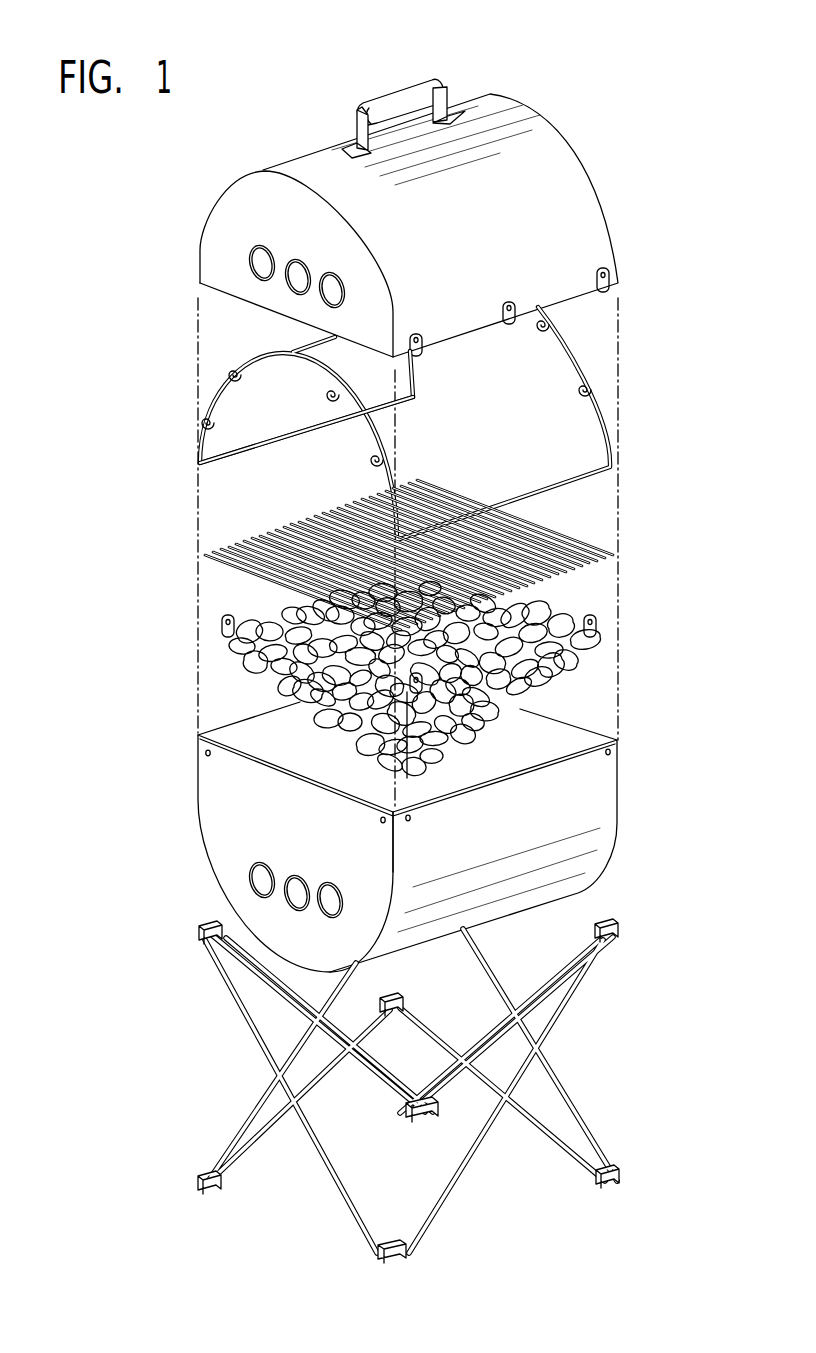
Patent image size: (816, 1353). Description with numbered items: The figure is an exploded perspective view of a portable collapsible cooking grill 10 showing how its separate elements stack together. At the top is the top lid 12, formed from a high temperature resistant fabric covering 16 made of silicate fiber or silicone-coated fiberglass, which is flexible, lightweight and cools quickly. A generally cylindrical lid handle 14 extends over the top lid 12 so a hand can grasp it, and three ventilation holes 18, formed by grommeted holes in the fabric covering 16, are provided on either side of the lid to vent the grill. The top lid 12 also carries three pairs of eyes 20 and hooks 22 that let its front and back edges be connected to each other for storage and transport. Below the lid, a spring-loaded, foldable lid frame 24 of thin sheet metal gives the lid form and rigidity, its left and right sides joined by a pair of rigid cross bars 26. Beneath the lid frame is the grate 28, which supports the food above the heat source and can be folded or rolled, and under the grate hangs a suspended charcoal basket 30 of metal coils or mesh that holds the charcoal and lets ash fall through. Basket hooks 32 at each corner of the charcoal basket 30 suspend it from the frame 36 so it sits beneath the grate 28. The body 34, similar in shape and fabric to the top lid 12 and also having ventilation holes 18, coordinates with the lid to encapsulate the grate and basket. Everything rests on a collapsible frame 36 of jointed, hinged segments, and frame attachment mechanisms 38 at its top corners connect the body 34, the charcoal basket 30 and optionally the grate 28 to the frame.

The portable collapsible cooking grill 10 is at (644, 106).
The top lid 12 is at (587, 207).
The lid handle 14 is at (397, 86).
The fabric covering 16 is at (225, 215).
The ventilation holes 18 is at (290, 280).
The eyes 20 is at (546, 114).
The hooks 22 is at (603, 284).
The lid frame 24 is at (603, 427).
The rigid cross bars 26 is at (262, 452).
The grate 28 is at (580, 533).
The charcoal basket 30 is at (580, 695).
The basket hooks 32 is at (218, 625).
The body 34 is at (593, 833).
The frame 36 is at (580, 1013).
The frame attachment mechanism 38 is at (620, 1181).